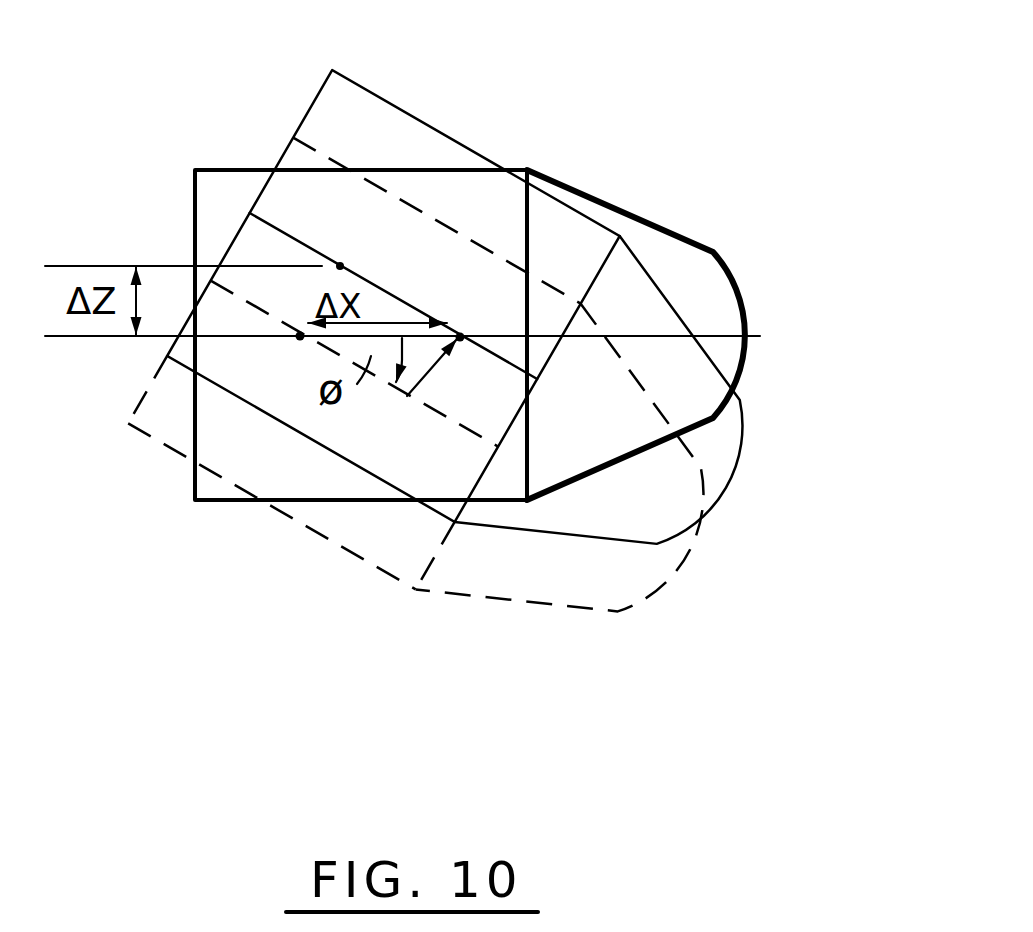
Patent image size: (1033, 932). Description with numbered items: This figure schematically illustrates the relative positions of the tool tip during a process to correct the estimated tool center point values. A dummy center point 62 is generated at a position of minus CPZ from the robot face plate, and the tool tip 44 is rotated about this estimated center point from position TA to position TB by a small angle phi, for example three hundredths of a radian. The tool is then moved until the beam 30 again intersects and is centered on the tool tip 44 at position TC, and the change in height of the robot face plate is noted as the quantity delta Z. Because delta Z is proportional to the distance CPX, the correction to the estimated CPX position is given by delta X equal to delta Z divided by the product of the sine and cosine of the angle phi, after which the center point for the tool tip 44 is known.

The dummy center point 62 is at (300, 336).
The beam 30 is at (654, 183).
The tool tip 44 is at (423, 467).
The position TA is at (411, 417).
The position TB is at (510, 603).
The position TC is at (515, 365).